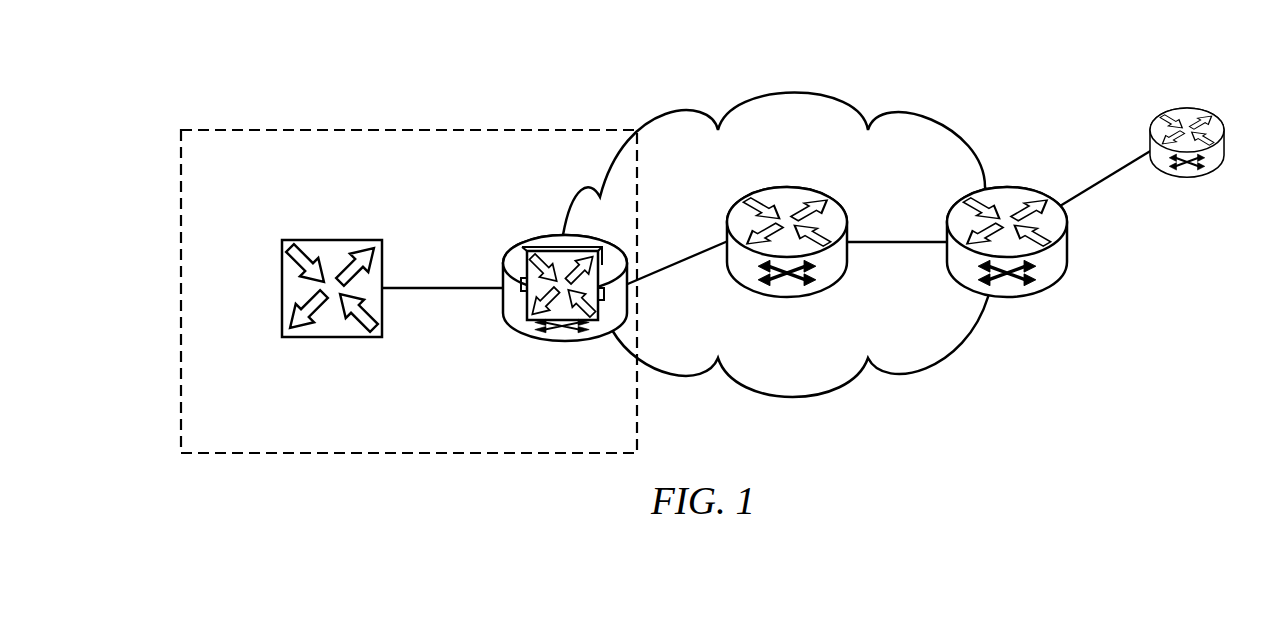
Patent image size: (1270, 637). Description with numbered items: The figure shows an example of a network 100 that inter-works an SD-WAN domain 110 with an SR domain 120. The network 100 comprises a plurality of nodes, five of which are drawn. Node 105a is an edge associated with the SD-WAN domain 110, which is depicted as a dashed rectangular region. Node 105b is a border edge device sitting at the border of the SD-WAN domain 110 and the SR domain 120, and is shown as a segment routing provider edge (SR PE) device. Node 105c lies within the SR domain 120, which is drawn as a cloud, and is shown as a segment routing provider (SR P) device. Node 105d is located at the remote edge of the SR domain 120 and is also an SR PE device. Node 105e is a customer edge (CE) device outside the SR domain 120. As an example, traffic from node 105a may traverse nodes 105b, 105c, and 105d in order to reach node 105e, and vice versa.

The network 100 is at (258, 32).
The node 105a is at (282, 283).
The node 105b is at (533, 237).
The node 105c is at (838, 204).
The node 105d is at (962, 283).
The node 105e is at (1154, 120).
The SD-WAN domain 110 is at (409, 291).
The SR domain 120 is at (778, 245).